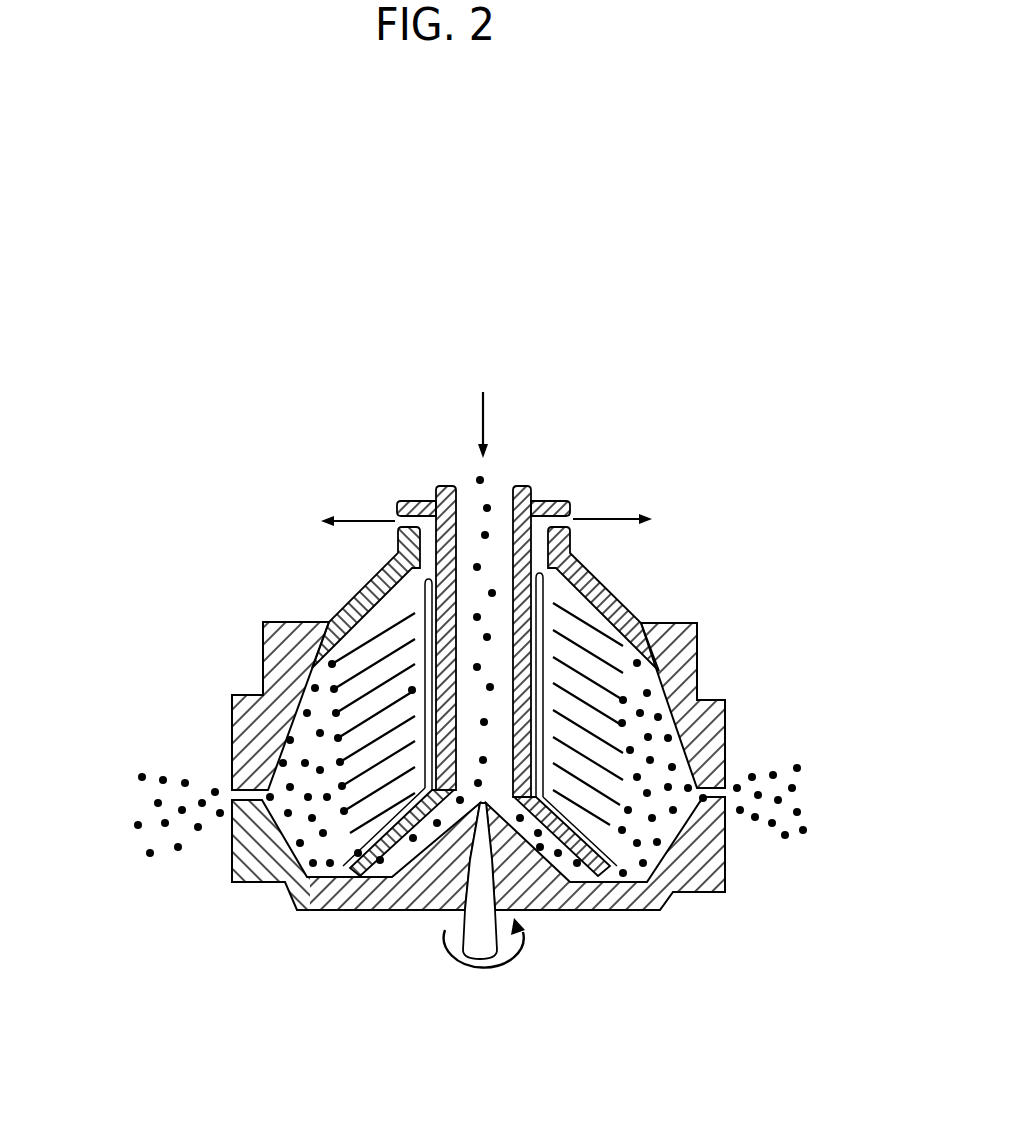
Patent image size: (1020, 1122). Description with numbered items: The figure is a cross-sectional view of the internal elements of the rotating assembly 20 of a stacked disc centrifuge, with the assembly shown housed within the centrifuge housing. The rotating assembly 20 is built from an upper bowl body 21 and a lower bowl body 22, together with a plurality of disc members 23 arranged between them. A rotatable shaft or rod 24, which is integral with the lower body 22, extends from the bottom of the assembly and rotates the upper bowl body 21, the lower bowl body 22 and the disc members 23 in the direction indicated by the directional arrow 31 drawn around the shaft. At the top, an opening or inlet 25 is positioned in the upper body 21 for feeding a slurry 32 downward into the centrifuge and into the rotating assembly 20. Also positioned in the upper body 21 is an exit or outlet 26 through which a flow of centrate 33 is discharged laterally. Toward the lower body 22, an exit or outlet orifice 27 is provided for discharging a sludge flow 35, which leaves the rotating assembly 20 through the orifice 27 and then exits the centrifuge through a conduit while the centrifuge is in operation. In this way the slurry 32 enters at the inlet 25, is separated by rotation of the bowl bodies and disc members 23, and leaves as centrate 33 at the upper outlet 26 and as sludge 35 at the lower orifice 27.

The rotating assembly 20 is at (513, 283).
The upper bowl body 21 is at (264, 668).
The lower bowl body 22 is at (230, 870).
The disc members 23 is at (374, 637).
The rotatable shaft or rod 24 is at (475, 922).
The opening or inlet 25 is at (472, 490).
The exit or outlet 26 is at (398, 506).
The exit or outlet orifice 27 is at (230, 790).
The directional arrow 31 is at (515, 963).
The slurry 32 is at (488, 420).
The flow of centrate 33 is at (358, 520).
The sludge flow 35 is at (202, 826).